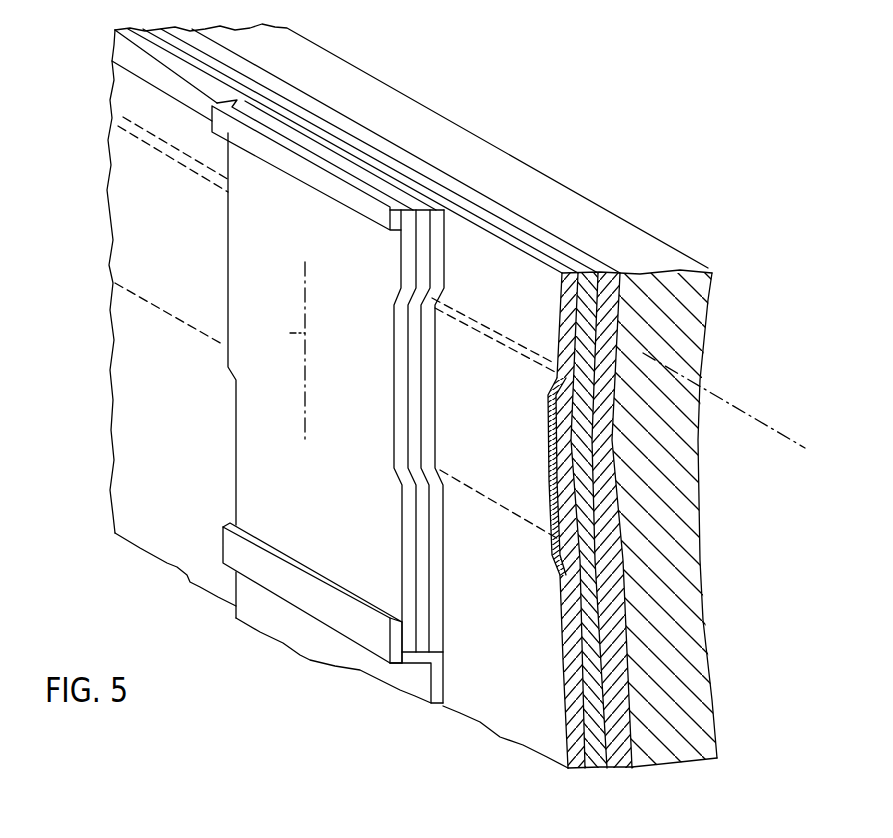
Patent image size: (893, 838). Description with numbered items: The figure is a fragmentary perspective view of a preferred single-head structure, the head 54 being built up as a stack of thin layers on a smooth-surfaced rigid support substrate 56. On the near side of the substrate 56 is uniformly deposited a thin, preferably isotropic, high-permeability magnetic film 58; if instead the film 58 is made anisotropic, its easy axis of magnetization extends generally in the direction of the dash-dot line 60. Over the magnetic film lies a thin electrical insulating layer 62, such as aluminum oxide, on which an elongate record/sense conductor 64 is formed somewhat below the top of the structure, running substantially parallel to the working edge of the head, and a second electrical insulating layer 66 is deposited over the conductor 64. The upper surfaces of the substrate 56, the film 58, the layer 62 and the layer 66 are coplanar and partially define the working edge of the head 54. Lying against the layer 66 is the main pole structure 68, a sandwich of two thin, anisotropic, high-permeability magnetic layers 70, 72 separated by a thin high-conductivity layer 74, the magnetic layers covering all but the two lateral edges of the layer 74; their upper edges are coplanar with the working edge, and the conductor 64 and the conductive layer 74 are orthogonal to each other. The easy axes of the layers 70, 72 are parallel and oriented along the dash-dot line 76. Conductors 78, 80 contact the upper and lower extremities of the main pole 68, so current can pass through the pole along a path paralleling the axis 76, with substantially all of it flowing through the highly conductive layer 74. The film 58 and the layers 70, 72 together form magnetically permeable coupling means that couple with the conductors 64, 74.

The head 54 is at (577, 106).
The support substrate 56 is at (592, 222).
The magnetic film 58 is at (588, 257).
The dash-dot line 60 is at (745, 410).
The electrical insulating layer 62 is at (620, 322).
The conductor 64 is at (553, 473).
The second electrical insulating layer 66 is at (553, 390).
The main pole structure 68 is at (243, 267).
The magnetic layer 70 is at (437, 290).
The magnetic layer 72 is at (408, 252).
The conductive layer 74 is at (412, 375).
The dash-dot line 76 is at (293, 333).
The conductor 78 is at (282, 162).
The conductor 80 is at (284, 580).